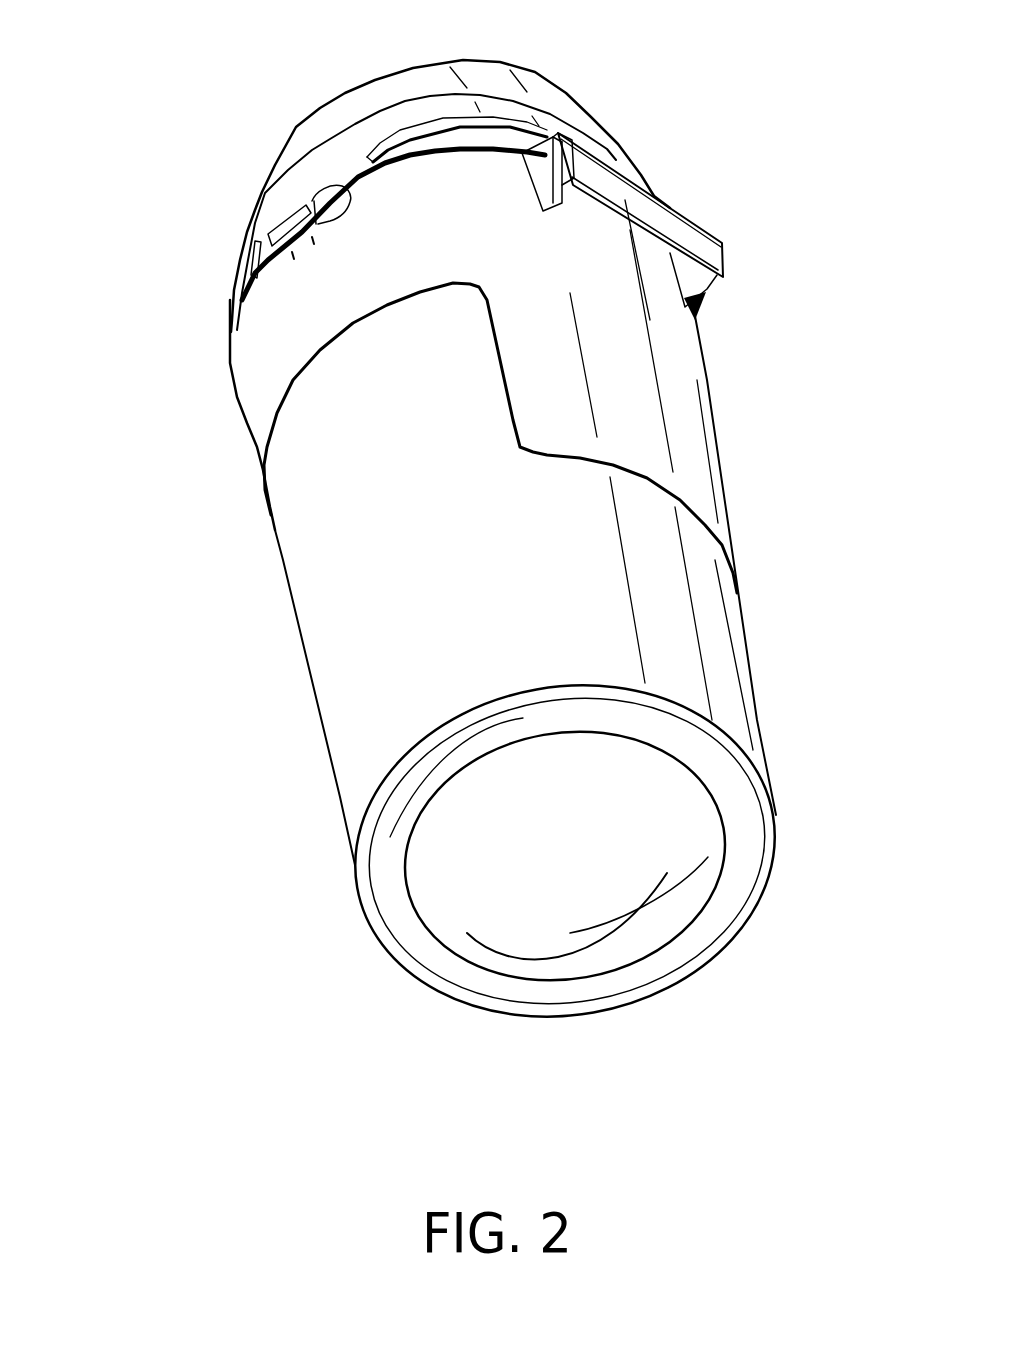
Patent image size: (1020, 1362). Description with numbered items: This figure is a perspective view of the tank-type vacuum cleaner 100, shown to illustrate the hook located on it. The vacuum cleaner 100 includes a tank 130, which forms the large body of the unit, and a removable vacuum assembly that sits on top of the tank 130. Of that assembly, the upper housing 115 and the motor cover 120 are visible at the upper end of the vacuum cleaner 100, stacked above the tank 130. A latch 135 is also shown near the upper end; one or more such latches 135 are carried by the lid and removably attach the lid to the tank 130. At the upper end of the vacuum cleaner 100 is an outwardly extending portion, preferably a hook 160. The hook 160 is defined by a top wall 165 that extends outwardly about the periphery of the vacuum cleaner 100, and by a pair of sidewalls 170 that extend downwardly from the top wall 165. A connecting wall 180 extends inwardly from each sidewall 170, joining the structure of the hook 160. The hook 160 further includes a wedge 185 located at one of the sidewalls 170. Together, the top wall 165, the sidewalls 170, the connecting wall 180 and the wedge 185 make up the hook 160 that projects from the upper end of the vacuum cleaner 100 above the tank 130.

The vacuum cleaner 100 is at (222, 69).
The motor cover 120 is at (294, 127).
The upper housing 115 is at (248, 222).
The latches 135 is at (250, 266).
The top wall 165 is at (472, 157).
The wedge 185 is at (540, 173).
The sidewalls 170 is at (550, 203).
The connecting wall 180 is at (668, 222).
The hook 160 is at (760, 222).
The tank 130 is at (721, 473).